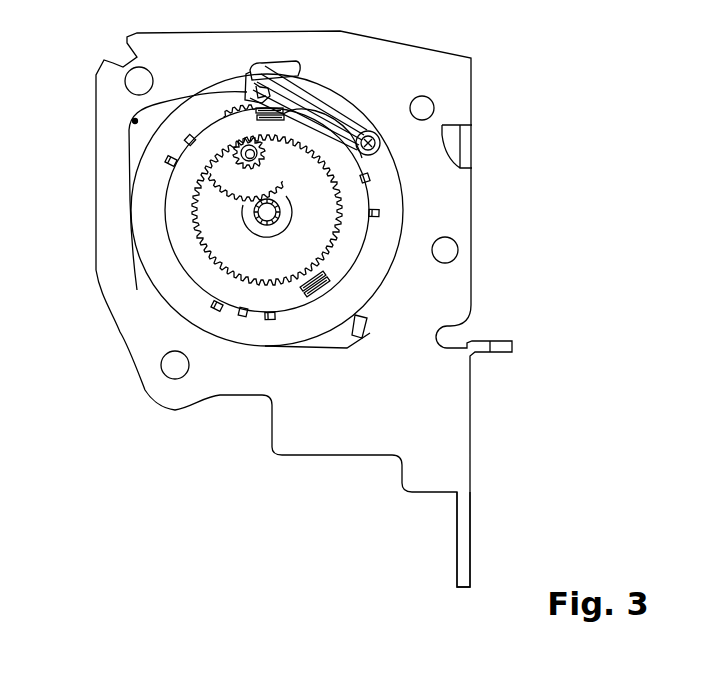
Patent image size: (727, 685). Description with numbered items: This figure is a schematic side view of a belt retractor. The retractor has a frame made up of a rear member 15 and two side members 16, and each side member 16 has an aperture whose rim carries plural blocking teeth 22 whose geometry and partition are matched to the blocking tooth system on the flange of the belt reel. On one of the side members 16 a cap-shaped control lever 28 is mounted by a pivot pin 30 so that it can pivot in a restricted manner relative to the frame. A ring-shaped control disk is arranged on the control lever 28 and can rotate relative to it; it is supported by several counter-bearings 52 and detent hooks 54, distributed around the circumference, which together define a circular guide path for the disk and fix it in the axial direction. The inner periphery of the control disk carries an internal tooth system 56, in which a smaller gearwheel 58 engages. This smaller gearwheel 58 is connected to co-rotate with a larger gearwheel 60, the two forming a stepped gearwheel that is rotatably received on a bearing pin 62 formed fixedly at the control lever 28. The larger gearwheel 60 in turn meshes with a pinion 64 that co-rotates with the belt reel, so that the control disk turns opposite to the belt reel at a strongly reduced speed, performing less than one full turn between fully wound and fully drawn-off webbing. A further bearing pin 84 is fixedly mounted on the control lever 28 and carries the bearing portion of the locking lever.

The rear member 15 is at (460, 536).
The side member 16 is at (312, 455).
The blocking teeth 22 is at (243, 90).
The control lever 28 is at (360, 290).
The pivot pin 30 is at (135, 120).
The counter-bearing 52 is at (166, 160).
The detent hook 54 is at (186, 140).
The internal tooth system 56 is at (197, 243).
The smaller gearwheel 58 is at (262, 152).
The larger gearwheel 60 is at (210, 175).
The bearing pin 62 is at (242, 157).
The pinion 64 is at (246, 222).
The bearing pin 84 is at (380, 143).